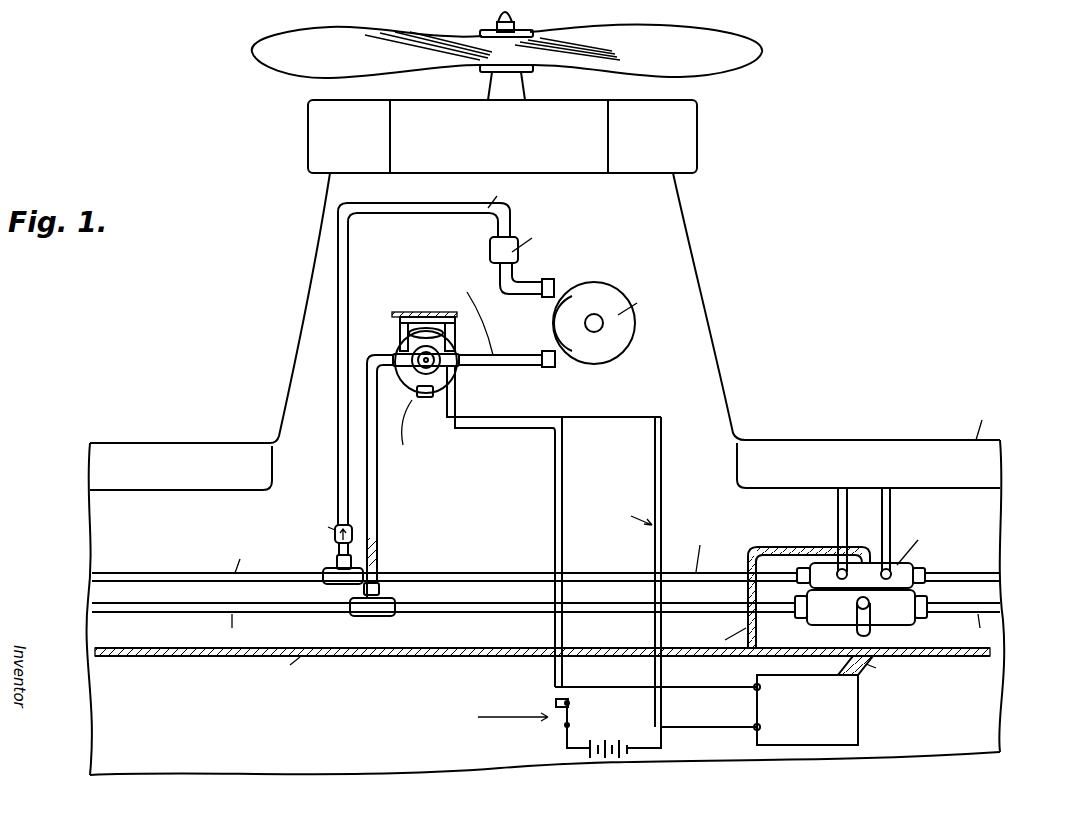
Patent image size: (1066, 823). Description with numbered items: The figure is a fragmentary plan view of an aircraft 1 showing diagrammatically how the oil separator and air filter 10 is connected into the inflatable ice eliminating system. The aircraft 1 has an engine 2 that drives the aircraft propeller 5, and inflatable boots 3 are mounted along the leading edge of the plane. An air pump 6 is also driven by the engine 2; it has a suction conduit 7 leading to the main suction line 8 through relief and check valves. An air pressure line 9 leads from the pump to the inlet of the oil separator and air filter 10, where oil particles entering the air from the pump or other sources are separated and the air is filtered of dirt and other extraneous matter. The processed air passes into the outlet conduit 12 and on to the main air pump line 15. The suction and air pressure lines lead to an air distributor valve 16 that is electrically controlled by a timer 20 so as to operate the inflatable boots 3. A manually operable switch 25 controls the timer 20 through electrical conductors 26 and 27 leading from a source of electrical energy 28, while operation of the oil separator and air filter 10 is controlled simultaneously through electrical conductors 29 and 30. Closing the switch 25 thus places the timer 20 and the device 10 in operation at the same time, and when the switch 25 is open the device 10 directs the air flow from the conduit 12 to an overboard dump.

The aircraft 1 is at (747, 354).
The engine 2 is at (315, 147).
The inflatable boots 3 is at (157, 448).
The aircraft propeller 5 is at (282, 62).
The air pump 6 is at (617, 347).
The suction conduit 7 is at (400, 212).
The main suction line 8 is at (472, 573).
The air pressure line 9 is at (487, 364).
The oil separator and air filter 10 is at (398, 337).
The outlet conduit 12 is at (380, 533).
The main air pump line 15 is at (484, 609).
The air distributor valve 16 is at (870, 562).
The timer 20 is at (858, 708).
The manually operable switch 25 is at (557, 726).
The electrical conductor 26 is at (712, 730).
The electrical conductor 27 is at (710, 688).
The source of electrical energy 28 is at (607, 740).
The electrical conductor 29 is at (563, 490).
The electrical conductor 30 is at (628, 414).